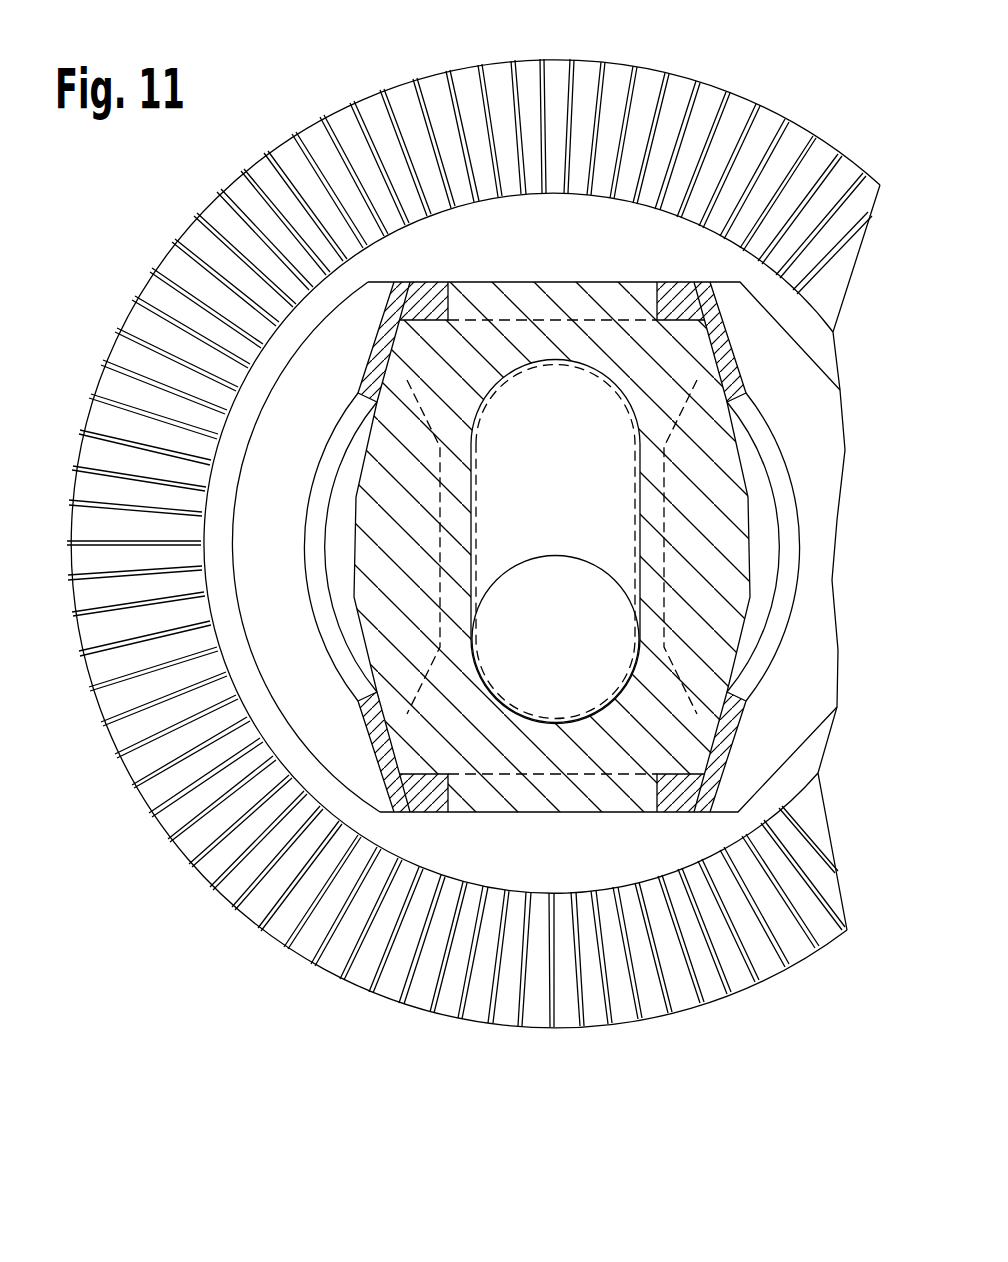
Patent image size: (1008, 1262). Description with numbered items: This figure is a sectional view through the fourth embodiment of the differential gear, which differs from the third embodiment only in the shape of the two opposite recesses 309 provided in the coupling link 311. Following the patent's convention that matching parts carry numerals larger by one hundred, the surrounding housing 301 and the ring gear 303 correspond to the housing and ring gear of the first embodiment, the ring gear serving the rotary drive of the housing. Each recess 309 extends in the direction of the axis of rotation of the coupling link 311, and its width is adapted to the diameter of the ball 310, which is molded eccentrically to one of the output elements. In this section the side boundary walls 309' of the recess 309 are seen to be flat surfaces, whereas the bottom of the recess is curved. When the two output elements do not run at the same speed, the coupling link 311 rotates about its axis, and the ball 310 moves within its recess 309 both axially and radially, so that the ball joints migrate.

The housing 301 is at (413, 306).
The stator core with slots 303 is at (645, 107).
The recess 309 is at (555, 542).
The side boundary wall 309' is at (554, 542).
The ball 310 is at (578, 658).
The coupling link 311 is at (558, 740).